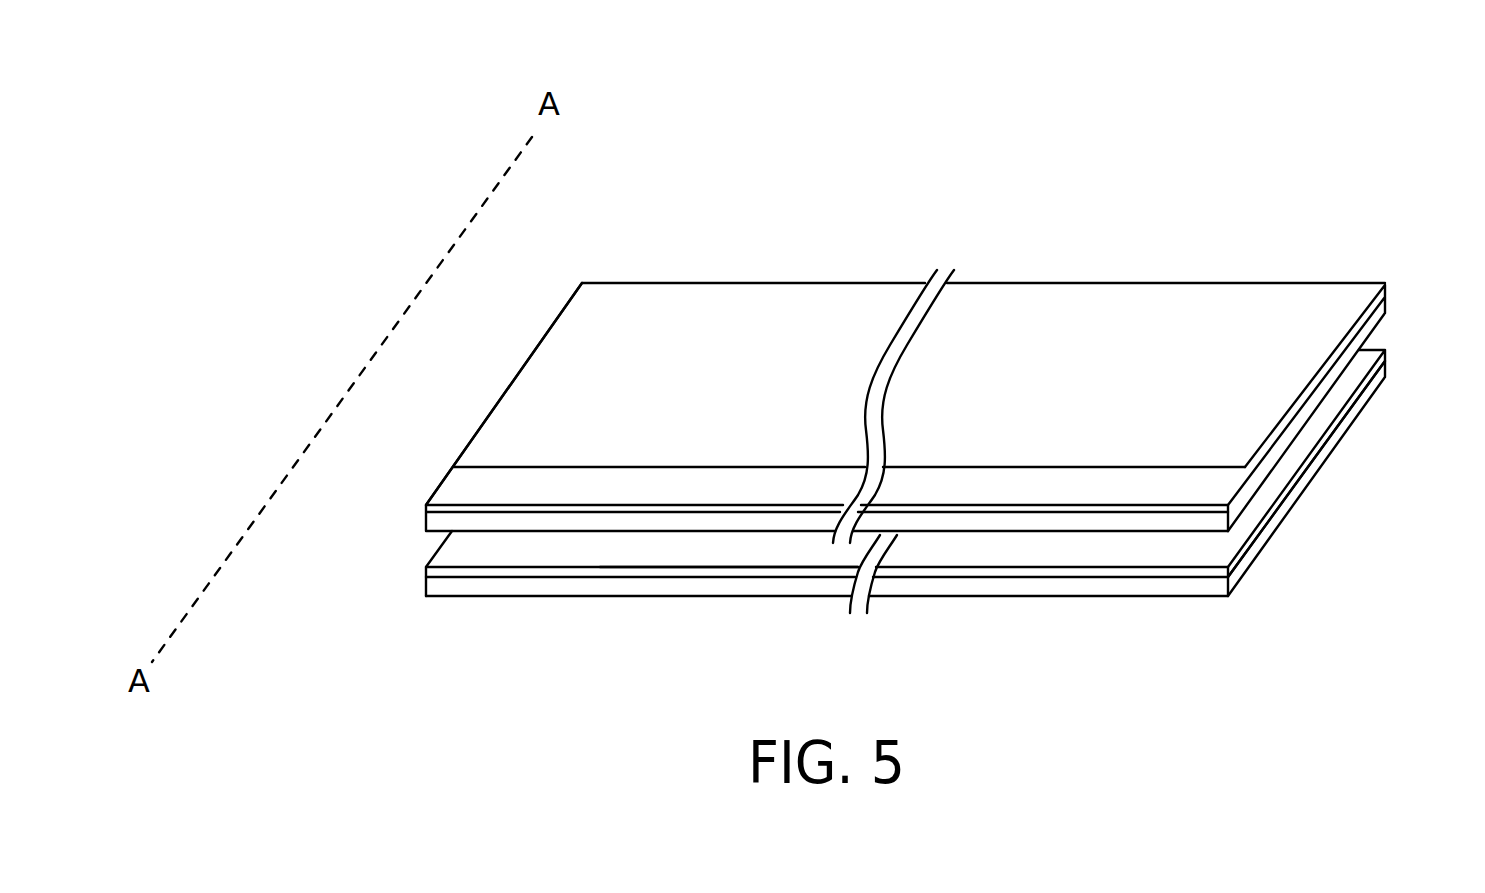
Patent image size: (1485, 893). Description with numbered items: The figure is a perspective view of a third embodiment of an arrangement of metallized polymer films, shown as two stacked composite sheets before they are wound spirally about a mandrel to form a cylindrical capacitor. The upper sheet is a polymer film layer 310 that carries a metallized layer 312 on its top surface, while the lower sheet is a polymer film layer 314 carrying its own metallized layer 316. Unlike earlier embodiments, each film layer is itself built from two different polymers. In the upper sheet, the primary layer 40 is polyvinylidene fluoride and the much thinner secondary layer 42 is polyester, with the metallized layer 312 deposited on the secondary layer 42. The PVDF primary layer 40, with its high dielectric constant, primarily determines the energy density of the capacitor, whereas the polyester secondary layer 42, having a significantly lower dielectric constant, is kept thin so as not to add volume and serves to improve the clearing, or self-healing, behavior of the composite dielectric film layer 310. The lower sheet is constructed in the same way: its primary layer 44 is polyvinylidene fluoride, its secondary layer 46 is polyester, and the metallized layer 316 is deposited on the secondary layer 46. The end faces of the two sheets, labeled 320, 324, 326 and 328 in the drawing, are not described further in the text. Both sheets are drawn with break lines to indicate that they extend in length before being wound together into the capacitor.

The film layer 310 is at (622, 282).
The metallized layer 312 is at (1103, 295).
The film layer 314 is at (452, 588).
The metallized layer 316 is at (743, 555).
The upper plate left end face 320 is at (492, 407).
The lower plate left end face 324 is at (433, 551).
The upper plate right end face 326 is at (1367, 319).
The lower plate right end face 328 is at (1305, 472).
The primary layer 40 is at (1150, 525).
The secondary layer 42 is at (1200, 512).
The primary layer 44 is at (965, 588).
The secondary layer 46 is at (1060, 573).